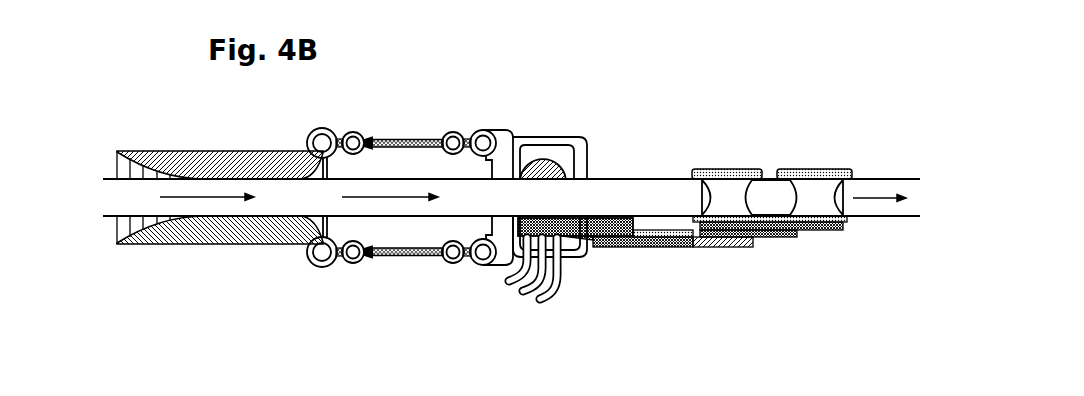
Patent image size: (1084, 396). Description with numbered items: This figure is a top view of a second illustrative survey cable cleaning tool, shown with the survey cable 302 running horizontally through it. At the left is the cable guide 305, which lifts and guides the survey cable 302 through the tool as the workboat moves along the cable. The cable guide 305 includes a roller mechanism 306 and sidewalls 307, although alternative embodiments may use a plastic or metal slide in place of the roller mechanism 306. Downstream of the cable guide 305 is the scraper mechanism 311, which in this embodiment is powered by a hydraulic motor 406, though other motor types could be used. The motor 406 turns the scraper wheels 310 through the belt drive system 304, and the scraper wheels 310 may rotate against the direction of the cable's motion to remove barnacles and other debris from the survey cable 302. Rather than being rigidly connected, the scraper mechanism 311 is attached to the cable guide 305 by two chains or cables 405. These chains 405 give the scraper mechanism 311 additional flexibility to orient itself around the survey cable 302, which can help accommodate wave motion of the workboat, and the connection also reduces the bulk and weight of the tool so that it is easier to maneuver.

The survey cable 302 is at (890, 217).
The belt drive system 304 is at (638, 252).
The cable guide 305 is at (330, 302).
The roller mechanism 306 is at (117, 168).
The sidewalls 307 is at (222, 148).
The scraper wheels 310 is at (818, 168).
The scraper mechanism 311 is at (717, 303).
The chains or cables 405 is at (402, 140).
The hydraulic motor 406 is at (578, 138).